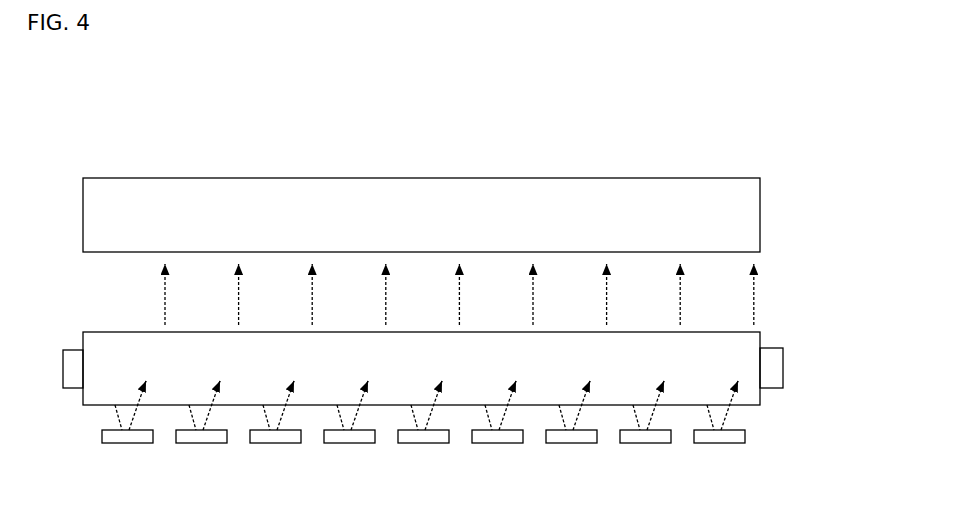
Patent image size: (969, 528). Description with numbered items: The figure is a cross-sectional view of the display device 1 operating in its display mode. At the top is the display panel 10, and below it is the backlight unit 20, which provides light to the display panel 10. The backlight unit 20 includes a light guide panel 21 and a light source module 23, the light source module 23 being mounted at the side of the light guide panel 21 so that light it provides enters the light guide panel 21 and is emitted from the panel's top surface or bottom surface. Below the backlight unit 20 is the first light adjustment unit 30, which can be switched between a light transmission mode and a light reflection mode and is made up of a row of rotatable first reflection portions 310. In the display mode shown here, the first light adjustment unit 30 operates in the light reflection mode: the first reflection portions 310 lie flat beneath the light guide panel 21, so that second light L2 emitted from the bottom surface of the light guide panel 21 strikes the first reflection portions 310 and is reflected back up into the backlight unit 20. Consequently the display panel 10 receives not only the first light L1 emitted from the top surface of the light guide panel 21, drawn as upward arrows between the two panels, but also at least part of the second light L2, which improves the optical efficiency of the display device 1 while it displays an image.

The display device 1 is at (176, 133).
The display panel 10 is at (760, 219).
The backlight unit 20 is at (474, 349).
The light guide panel 21 is at (693, 345).
The light source module 23 is at (775, 368).
The first light adjustment unit 30 is at (463, 465).
The first reflection portions 310 is at (570, 443).
The first light L1 is at (164, 300).
The second light L2 is at (116, 411).